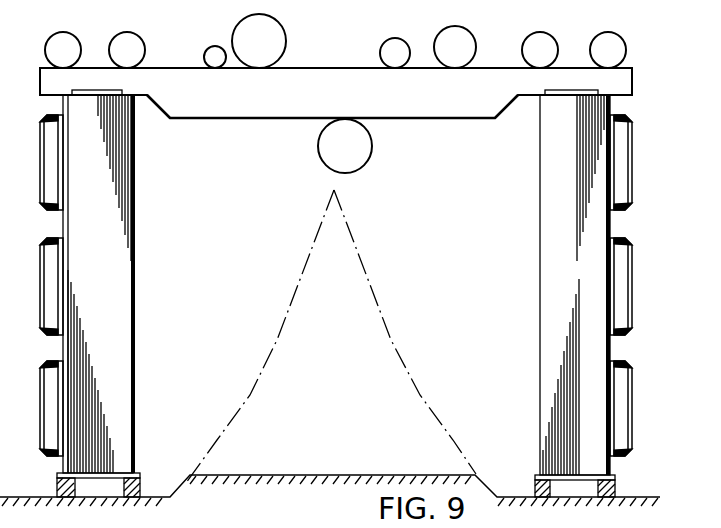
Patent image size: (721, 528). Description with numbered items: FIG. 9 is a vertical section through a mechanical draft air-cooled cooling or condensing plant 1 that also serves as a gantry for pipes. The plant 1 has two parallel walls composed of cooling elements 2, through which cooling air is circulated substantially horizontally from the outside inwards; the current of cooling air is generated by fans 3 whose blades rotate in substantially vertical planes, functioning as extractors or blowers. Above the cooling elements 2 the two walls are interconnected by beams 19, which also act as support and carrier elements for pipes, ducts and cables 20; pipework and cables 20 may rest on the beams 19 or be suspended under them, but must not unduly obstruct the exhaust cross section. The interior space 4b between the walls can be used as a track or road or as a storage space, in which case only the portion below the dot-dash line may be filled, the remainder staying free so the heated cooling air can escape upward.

The cooling or condensing plant 1 is at (639, 60).
The cooling elements 2 is at (122, 438).
The fans 3 is at (50, 407).
The interior space 4b is at (455, 143).
The beams 19 is at (263, 112).
The pipes, ducts and cables 20 is at (281, 42).